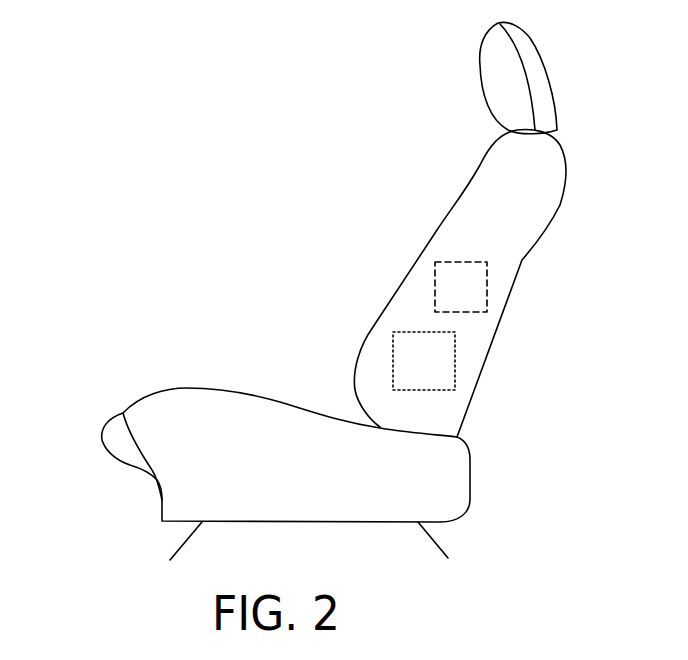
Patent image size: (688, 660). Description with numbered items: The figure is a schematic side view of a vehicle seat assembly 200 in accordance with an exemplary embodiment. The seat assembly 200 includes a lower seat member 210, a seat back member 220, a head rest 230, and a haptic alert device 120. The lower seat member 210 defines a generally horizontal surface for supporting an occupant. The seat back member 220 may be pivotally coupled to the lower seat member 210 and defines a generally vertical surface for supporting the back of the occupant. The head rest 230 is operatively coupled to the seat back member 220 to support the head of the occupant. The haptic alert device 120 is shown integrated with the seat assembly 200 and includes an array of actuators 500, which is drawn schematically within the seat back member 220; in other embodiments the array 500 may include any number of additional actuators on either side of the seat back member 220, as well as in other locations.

The seat assembly 200 is at (193, 168).
The lower seat member 210 is at (100, 433).
The seat back member 220 is at (508, 292).
The head rest 230 is at (548, 78).
The haptic alert device 120 is at (453, 370).
The array of actuators 500 is at (476, 252).